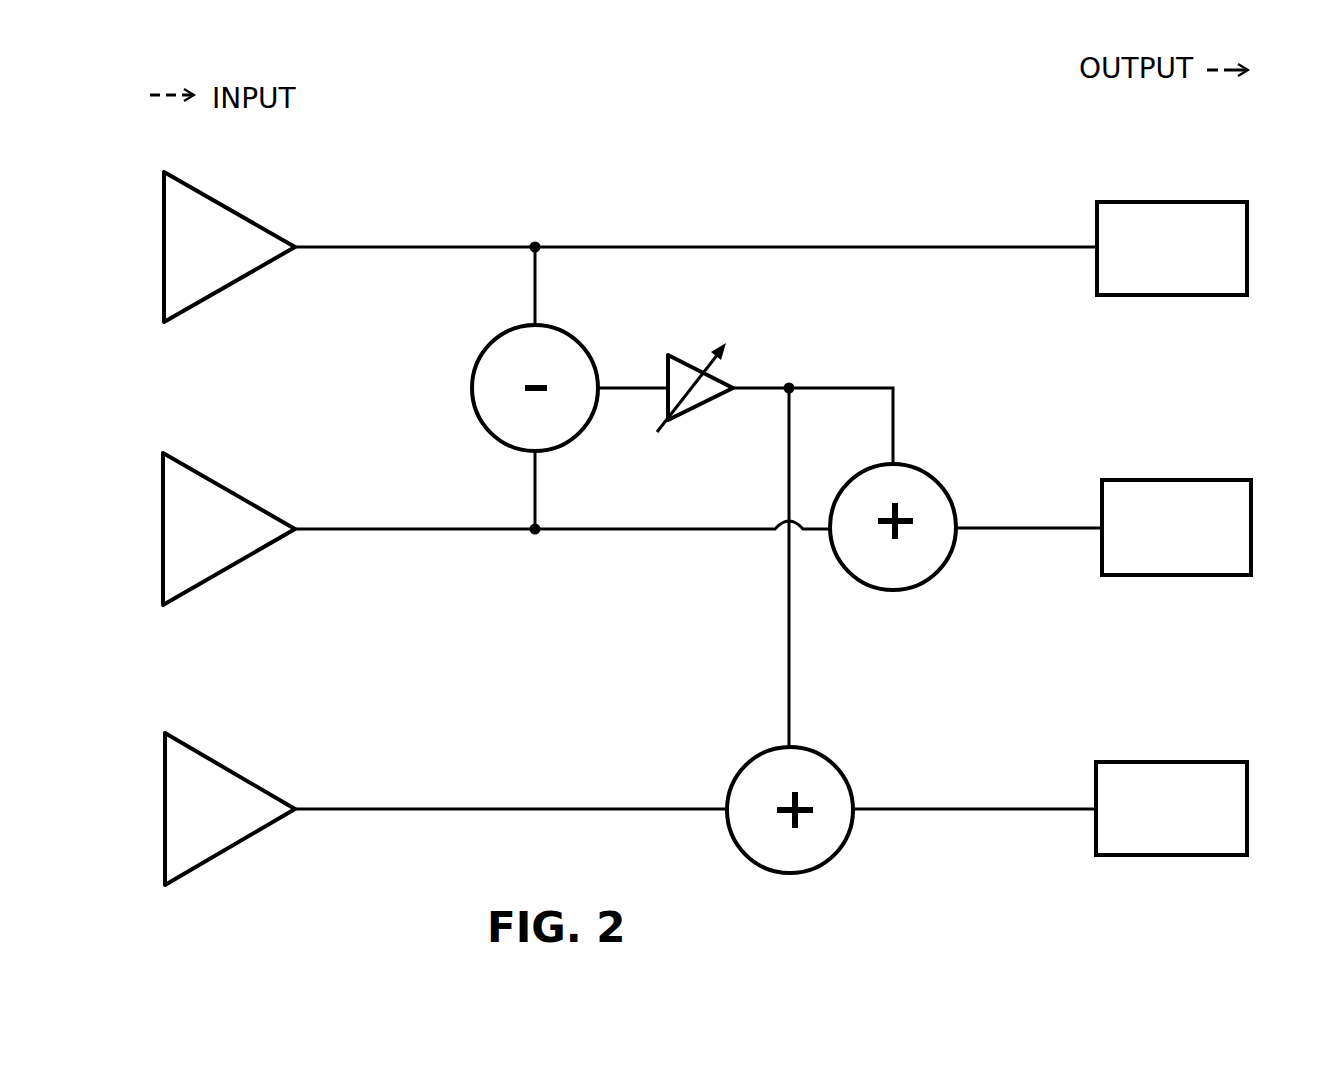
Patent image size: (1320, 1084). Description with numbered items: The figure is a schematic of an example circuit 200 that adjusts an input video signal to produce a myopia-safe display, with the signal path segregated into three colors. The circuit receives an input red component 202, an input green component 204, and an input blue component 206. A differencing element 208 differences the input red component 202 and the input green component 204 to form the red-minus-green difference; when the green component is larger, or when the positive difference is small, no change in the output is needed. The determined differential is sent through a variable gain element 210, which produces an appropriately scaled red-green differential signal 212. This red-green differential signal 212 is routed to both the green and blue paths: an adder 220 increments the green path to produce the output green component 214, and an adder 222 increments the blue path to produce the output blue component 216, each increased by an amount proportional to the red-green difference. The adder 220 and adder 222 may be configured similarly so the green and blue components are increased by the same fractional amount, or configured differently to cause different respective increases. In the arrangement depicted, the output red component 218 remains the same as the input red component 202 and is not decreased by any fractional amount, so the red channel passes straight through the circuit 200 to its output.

The circuit 200 is at (918, 156).
The input red component 202 is at (221, 201).
The input green component 204 is at (221, 484).
The input blue component 206 is at (230, 768).
The differencing element 208 is at (501, 331).
The variable gain element 210 is at (672, 421).
The red-green differential signal 212 is at (763, 394).
The output green component 214 is at (1180, 480).
The output blue component 216 is at (1180, 762).
The output red component 218 is at (1162, 202).
The adder 220 is at (928, 470).
The adder 222 is at (817, 750).